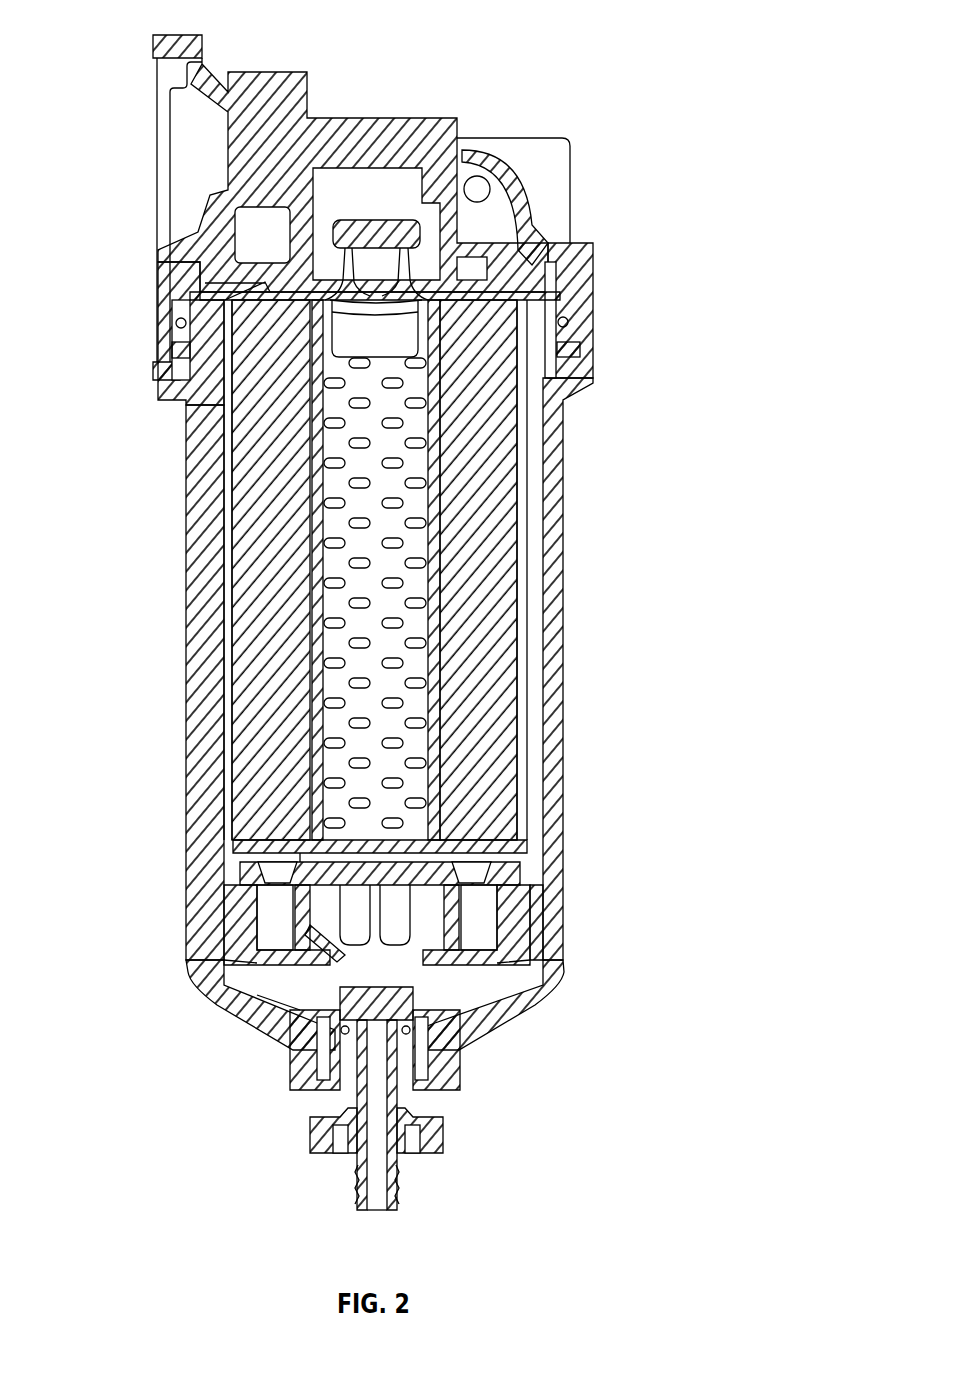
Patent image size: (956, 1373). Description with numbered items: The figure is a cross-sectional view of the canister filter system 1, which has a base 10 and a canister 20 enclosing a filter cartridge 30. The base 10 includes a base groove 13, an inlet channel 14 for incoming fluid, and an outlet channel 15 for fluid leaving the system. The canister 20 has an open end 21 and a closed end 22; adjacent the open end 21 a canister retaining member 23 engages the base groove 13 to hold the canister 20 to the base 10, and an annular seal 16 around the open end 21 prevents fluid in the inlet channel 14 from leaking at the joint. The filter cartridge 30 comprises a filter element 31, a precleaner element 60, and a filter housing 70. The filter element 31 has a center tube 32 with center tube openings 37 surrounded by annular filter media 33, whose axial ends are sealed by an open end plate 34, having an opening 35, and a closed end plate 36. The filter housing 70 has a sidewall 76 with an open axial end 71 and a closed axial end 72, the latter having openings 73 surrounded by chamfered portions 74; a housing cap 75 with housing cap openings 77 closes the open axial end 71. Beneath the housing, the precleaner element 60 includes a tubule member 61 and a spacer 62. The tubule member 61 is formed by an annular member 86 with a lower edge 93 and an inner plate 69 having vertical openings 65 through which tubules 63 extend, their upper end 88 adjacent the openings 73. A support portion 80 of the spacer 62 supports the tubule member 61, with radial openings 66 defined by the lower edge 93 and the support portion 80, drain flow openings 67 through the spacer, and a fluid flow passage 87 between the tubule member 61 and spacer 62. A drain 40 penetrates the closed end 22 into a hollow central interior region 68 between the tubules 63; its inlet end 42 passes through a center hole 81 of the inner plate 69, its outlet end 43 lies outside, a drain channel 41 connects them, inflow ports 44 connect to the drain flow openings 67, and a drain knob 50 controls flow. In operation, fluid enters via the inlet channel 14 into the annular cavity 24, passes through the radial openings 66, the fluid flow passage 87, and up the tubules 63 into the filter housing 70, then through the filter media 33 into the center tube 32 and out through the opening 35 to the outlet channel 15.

The canister filter system 1 is at (126, 22).
The base 10 is at (593, 295).
The base groove 13 is at (582, 348).
The inlet channel 14 is at (597, 265).
The outlet channel 15 is at (358, 172).
The annular seal 16 is at (180, 340).
The canister 20 is at (556, 620).
The open end 21 is at (178, 312).
The closed end 22 is at (465, 1050).
The canister retaining member 23 is at (578, 328).
The annular cavity 24 is at (560, 660).
The filter cartridge 30 is at (93, 287).
The filter element 31 is at (496, 515).
The center tube 32 is at (520, 482).
The filter media 33 is at (245, 525).
The open end plate 34 is at (250, 240).
The opening 35 is at (372, 262).
The closed end plate 36 is at (318, 790).
The center tube openings 37 is at (318, 620).
The drain 40 is at (398, 1190).
The drain channel 41 is at (368, 1205).
The inlet end 42 is at (300, 1080).
The outlet end 43 is at (372, 1216).
The inflow ports 44 is at (338, 1040).
The drain knob 50 is at (312, 1146).
The precleaner element 60 is at (638, 880).
The tubule member 61 is at (263, 915).
The spacer 62 is at (300, 1012).
The tubules 63 is at (520, 900).
The vertical openings 65 is at (252, 905).
The radial openings 66 is at (527, 975).
The drain flow openings 67 is at (535, 1000).
The hollow central interior region 68 is at (410, 925).
The inner plate 69 is at (315, 1012).
The filter housing 70 is at (500, 548).
The open axial end 71 is at (508, 300).
The closed axial end 72 is at (450, 840).
The openings 73 is at (252, 880).
The chamfered portions 74 is at (272, 880).
The housing cap 75 is at (380, 262).
The sidewall 76 is at (546, 592).
The housing cap openings 77 is at (448, 270).
The support portion 80 is at (518, 962).
The center hole 81 is at (462, 1092).
The annular member 86 is at (530, 930).
The fluid flow passage 87 is at (265, 1000).
The upper end 88 is at (296, 872).
The lower edge 93 is at (270, 945).